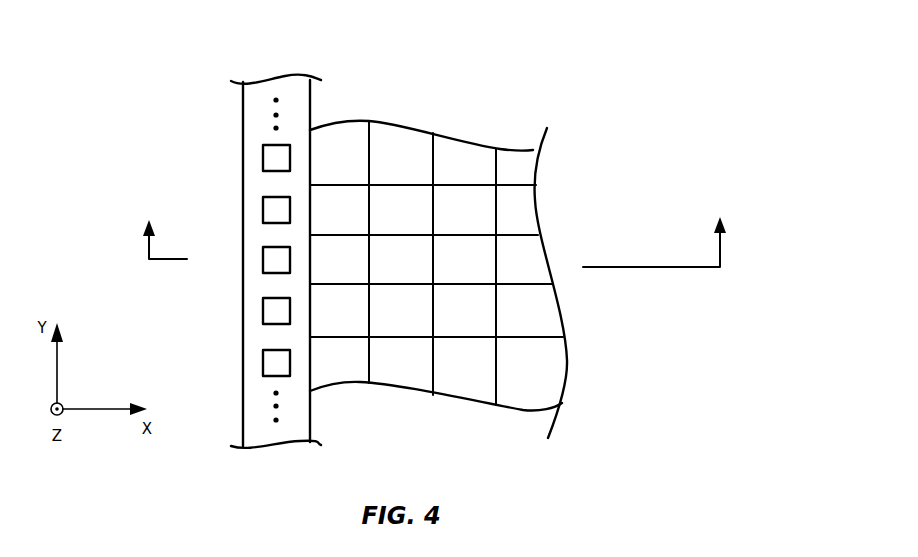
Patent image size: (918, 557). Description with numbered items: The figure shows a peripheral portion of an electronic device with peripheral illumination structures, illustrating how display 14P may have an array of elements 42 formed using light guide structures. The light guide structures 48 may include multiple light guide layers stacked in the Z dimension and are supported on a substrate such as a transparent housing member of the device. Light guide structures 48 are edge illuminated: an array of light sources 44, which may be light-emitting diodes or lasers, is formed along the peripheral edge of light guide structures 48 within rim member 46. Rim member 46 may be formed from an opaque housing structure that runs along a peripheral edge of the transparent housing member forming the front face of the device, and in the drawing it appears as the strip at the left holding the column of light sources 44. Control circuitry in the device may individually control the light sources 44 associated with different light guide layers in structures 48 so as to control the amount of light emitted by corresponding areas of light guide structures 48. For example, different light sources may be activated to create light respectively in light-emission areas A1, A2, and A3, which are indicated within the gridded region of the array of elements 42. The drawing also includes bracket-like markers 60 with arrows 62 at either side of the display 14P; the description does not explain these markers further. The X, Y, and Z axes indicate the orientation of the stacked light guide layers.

The display 14P is at (588, 61).
The array of elements 42 is at (458, 150).
The light sources 44 is at (262, 260).
The rim member 46 is at (252, 411).
The light guide structures 48 is at (541, 210).
The light guide / bracket 60 is at (170, 260).
The light emission direction arrow 62 is at (148, 248).
The light-emission area A1 is at (353, 268).
The light-emission area A2 is at (402, 268).
The light-emission area A3 is at (467, 268).